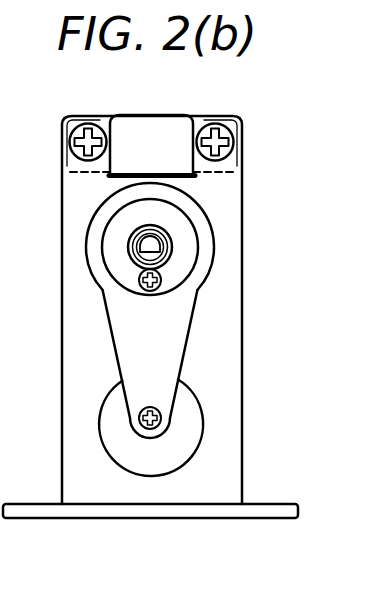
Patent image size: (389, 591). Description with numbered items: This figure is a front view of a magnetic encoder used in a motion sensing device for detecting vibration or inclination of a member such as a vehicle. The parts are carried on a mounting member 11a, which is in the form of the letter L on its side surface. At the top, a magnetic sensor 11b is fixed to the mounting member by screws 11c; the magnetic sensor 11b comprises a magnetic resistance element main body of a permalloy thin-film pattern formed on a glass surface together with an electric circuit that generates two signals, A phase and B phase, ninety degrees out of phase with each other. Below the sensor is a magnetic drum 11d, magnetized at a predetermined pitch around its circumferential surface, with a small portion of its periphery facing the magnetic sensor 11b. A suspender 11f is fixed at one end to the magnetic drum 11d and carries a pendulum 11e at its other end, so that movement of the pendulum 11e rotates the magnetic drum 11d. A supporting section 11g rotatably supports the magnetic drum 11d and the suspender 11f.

The mounting member 11a is at (218, 511).
The magnetic sensor 11b is at (150, 173).
The screw 11c is at (68, 126).
The magnetic drum 11d is at (212, 262).
The pendulum 11e is at (200, 422).
The suspender 11f is at (183, 328).
The supporting section 11g is at (164, 234).